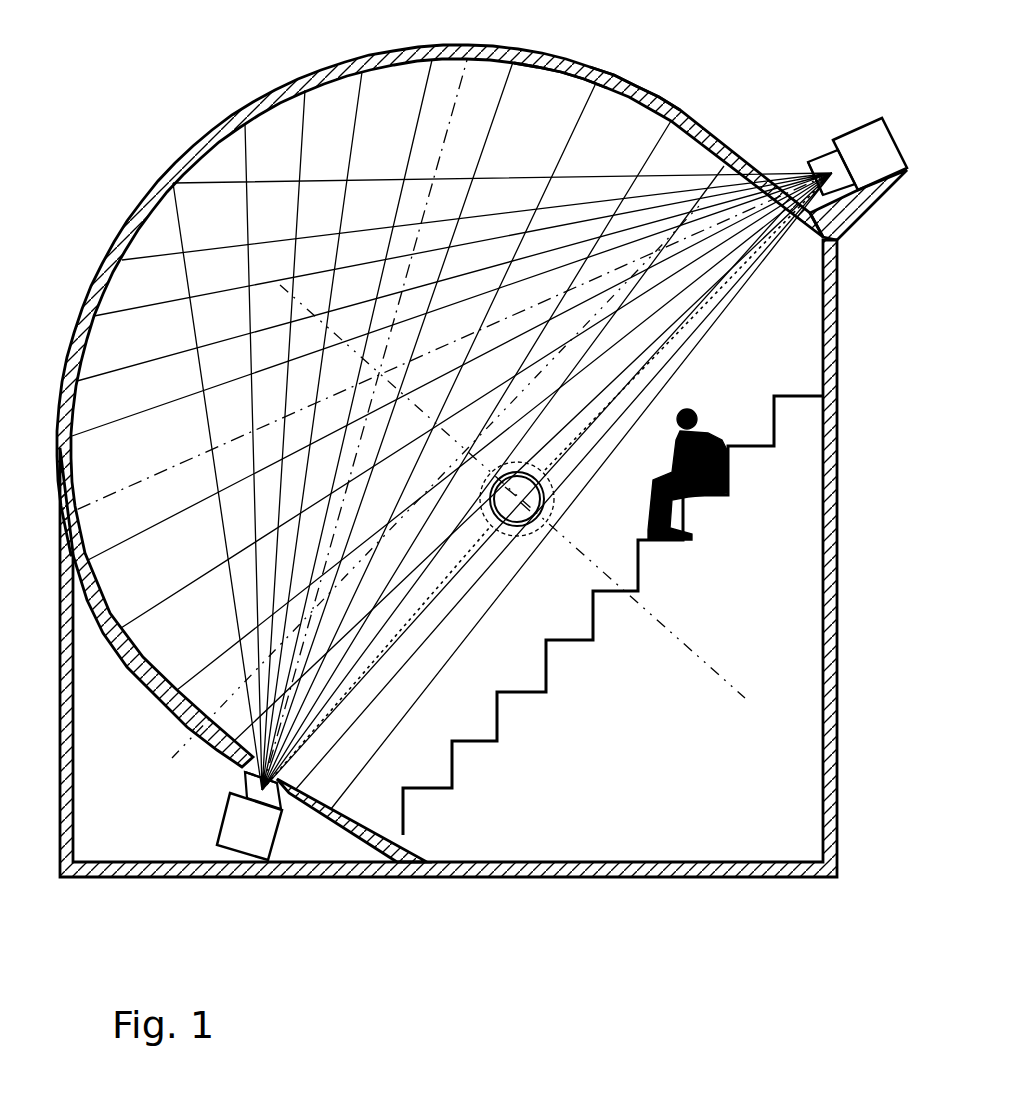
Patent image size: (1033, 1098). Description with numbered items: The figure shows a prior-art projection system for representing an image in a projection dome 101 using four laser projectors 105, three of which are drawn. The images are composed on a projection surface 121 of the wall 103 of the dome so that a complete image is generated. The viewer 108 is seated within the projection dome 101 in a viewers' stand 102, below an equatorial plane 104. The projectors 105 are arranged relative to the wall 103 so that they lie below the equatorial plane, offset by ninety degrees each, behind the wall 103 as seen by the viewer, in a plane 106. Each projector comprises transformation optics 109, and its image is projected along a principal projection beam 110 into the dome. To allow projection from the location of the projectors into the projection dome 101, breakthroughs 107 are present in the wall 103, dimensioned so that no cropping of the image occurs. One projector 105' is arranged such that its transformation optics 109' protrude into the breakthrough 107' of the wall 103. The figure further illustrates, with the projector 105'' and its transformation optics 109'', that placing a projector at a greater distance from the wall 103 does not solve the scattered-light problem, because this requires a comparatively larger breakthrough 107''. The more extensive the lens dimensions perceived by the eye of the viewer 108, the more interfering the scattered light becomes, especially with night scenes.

The projection dome 101 is at (292, 72).
The viewers' stand 102 is at (532, 694).
The wall 103 is at (636, 83).
The equatorial plane 104 is at (173, 755).
The projector 105 is at (556, 499).
The projector 105' is at (196, 826).
The projector 105'' is at (868, 112).
The plane 106 is at (387, 637).
The breakthrough 107 is at (557, 516).
The breakthrough 107' is at (193, 793).
The breakthrough 107'' is at (770, 136).
The viewer 108 is at (728, 464).
The transformation optics 109 is at (512, 491).
The transformation optics 109' is at (292, 817).
The transformation optics 109'' is at (807, 115).
The principal projection beam 110 is at (465, 97).
The projection surface 121 is at (560, 85).